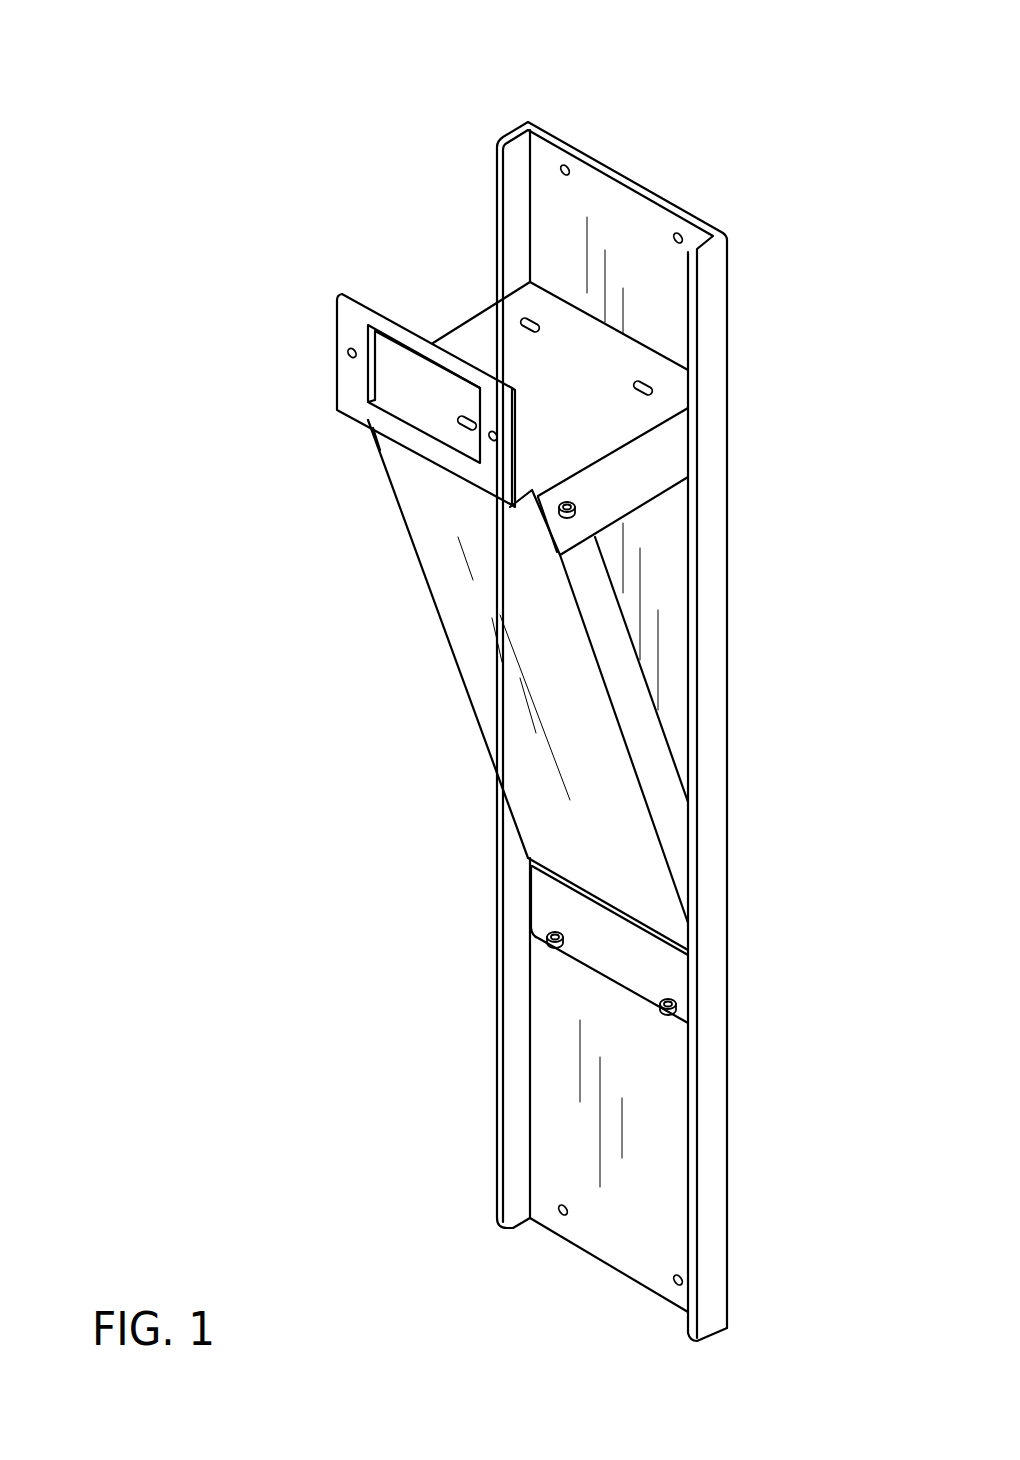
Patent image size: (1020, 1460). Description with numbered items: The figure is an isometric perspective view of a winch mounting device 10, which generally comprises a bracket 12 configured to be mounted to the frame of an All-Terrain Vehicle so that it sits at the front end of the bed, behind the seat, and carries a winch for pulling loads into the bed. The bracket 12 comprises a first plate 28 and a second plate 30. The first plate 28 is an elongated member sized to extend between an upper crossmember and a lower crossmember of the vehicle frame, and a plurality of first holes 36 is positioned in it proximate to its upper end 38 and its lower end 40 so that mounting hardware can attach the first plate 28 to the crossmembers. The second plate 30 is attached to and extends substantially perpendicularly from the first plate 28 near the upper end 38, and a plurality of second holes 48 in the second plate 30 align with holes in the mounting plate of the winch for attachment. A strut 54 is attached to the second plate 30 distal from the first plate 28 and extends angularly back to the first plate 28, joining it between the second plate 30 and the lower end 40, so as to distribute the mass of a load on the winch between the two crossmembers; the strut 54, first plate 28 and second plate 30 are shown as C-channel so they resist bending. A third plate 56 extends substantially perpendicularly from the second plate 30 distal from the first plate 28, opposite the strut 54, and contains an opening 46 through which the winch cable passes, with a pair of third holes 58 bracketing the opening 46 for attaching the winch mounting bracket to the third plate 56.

The winch mounting device 10 is at (402, 117).
The bracket 12 is at (513, 438).
The first plate 28 is at (648, 1083).
The second plate 30 is at (483, 340).
The first holes 36 is at (680, 233).
The upper end 38 is at (700, 217).
The lower end 40 is at (665, 1300).
The opening 46 is at (420, 395).
The second holes 48 is at (478, 420).
The strut 54 is at (503, 697).
The third plate 56 is at (342, 332).
The third holes 58 is at (492, 437).